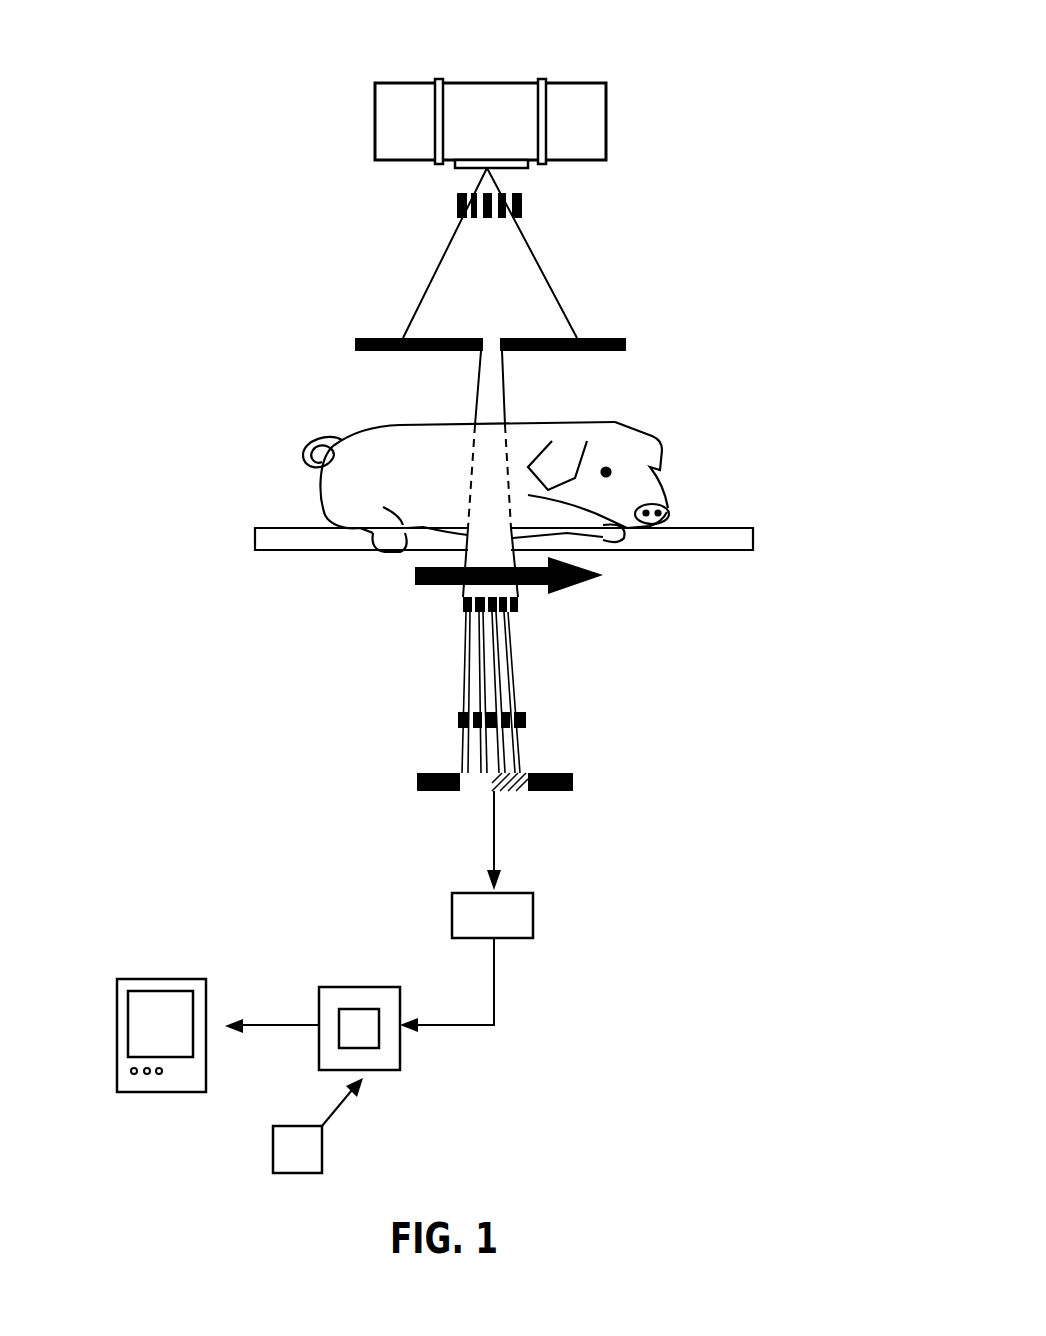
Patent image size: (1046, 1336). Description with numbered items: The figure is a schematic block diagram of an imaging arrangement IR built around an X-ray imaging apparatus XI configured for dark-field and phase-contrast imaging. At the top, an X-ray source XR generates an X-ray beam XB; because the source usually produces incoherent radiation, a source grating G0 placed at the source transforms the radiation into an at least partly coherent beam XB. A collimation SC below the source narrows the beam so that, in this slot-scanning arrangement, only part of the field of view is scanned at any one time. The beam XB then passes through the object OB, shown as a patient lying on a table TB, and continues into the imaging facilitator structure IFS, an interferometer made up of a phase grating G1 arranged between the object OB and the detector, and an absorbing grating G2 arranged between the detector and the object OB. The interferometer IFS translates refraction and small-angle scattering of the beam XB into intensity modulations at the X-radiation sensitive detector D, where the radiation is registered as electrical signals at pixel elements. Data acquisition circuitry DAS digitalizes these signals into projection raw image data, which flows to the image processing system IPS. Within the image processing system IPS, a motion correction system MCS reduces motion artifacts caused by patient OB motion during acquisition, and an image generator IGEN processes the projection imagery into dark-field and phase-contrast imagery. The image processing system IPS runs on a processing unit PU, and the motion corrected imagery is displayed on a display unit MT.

The imaging arrangement IR is at (215, 118).
The X-ray imaging apparatus XI is at (700, 255).
The X-ray source XR is at (620, 65).
The X-ray beam XB is at (454, 288).
The source grating G0 is at (527, 202).
The collimation SC is at (626, 344).
The object OB is at (370, 443).
The support table TB is at (717, 527).
The imaging facilitator structure IFS is at (690, 672).
The phase grating G1 is at (520, 608).
The absorbing grating structure G2 is at (527, 719).
The X-radiation sensitive detector D is at (573, 785).
The data acquisition circuitry DAS is at (466, 962).
The motion correction system MCS is at (371, 995).
The image generator IGEN is at (379, 1042).
The display unit MT is at (176, 950).
The processing unit PU is at (295, 1125).
The image processing system IPS is at (590, 995).